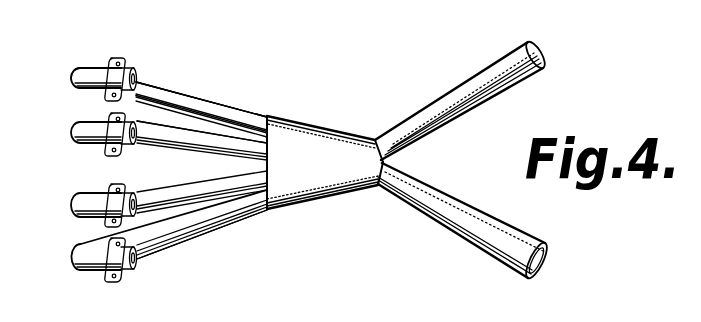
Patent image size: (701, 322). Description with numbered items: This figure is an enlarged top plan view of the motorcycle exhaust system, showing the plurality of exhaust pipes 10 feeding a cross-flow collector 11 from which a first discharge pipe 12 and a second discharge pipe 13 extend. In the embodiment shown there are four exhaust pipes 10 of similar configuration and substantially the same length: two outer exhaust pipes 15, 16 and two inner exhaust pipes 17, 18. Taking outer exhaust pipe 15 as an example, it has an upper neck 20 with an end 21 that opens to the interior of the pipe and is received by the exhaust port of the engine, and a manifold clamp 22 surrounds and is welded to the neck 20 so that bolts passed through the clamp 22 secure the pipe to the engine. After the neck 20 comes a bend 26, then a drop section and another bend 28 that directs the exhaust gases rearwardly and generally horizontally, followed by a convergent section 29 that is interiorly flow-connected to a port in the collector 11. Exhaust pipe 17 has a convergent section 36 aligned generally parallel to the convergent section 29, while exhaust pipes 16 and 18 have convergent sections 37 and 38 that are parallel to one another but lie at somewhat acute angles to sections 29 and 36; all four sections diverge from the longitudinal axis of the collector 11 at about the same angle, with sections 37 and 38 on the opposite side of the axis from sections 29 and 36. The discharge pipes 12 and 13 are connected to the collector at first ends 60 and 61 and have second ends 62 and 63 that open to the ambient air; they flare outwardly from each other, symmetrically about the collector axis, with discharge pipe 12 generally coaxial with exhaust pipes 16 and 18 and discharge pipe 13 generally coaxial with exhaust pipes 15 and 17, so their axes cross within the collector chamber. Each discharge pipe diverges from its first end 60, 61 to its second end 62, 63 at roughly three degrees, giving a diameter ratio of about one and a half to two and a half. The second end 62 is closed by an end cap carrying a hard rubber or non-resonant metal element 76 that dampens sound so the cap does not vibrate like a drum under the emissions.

The exhaust pipes 10 is at (243, 113).
The cross-flow collector 11 is at (311, 125).
The first discharge pipe 12 is at (445, 228).
The second discharge pipe 13 is at (460, 86).
The outer exhaust pipe 15 is at (203, 234).
The outer exhaust pipe 16 is at (207, 102).
The inner exhaust pipe 17 is at (195, 188).
The inner exhaust pipe 18 is at (238, 156).
The upper neck 20 is at (92, 91).
The end 21 is at (134, 70).
The manifold clamp 22 is at (113, 184).
The bend 26 is at (72, 77).
The bend 28 is at (183, 98).
The convergent section 29 is at (262, 212).
The convergent section 36 is at (267, 183).
The convergent section 37 is at (225, 106).
The convergent section 38 is at (194, 144).
The first end 60 is at (375, 183).
The first end 61 is at (375, 139).
The second end 62 is at (549, 246).
The second end 63 is at (534, 41).
The element 76 is at (552, 259).